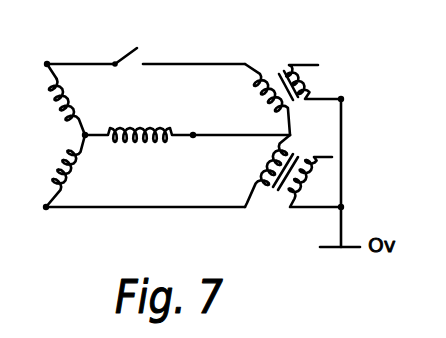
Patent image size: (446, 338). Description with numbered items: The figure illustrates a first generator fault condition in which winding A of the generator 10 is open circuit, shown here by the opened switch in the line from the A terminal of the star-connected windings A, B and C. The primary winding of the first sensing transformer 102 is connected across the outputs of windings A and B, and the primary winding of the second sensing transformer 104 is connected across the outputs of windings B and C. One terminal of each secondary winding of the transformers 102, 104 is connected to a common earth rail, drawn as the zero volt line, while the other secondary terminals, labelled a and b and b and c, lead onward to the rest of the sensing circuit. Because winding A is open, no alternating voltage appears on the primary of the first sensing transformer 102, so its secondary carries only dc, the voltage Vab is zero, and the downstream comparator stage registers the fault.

The generator 10 is at (72, 74).
The first sensing transformer 102 is at (307, 75).
The second sensing transformer 104 is at (312, 183).